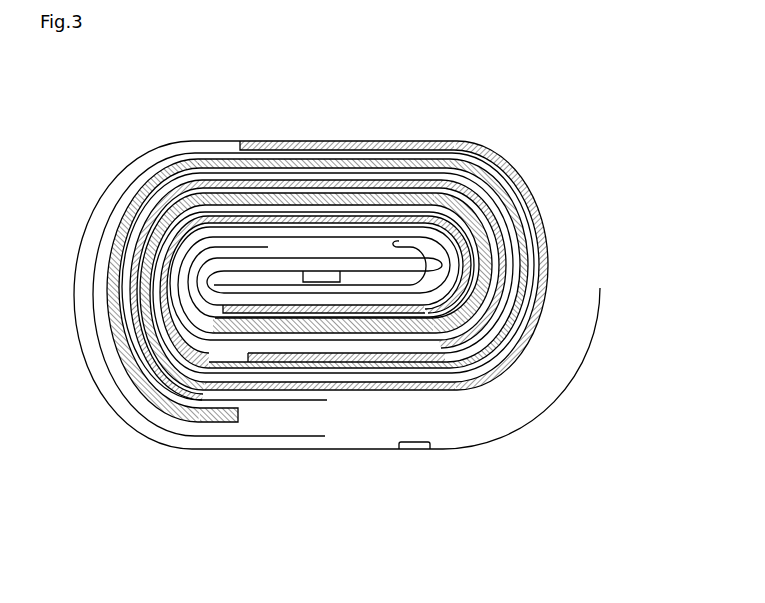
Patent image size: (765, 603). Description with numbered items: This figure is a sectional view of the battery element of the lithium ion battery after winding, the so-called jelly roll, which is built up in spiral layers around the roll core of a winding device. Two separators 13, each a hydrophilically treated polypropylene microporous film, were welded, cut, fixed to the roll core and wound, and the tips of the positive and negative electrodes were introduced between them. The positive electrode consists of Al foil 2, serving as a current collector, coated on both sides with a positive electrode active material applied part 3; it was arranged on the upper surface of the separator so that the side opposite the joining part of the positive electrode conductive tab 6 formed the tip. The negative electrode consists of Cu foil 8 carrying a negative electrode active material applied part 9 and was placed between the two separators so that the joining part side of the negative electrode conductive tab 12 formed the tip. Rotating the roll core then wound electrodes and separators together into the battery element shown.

The Al foil 2 is at (520, 428).
The positive electrode active material applied part 3 is at (341, 143).
The positive electrode conductive tab 6 is at (413, 451).
The Cu foil 8 is at (117, 233).
The negative electrode active material applied part 9 is at (193, 425).
The negative electrode conductive tab 12 is at (318, 270).
The separator 13 is at (167, 162).